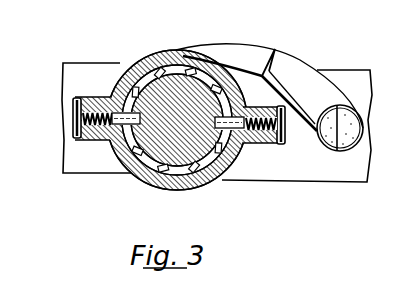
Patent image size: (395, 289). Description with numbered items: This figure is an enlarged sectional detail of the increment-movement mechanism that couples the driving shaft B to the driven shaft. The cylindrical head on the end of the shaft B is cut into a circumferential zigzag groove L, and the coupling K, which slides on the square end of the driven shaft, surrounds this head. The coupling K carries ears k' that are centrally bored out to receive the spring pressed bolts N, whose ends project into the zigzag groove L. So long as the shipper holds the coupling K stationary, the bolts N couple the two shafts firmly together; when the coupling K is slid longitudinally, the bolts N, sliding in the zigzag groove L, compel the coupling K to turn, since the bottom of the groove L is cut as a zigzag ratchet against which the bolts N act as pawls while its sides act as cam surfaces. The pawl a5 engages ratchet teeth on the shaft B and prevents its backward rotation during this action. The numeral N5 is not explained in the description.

The ears k' is at (81, 104).
The spring pressed bolts N is at (118, 108).
The zigzag groove L is at (196, 52).
The pawl a5 is at (312, 68).
The shaft B is at (152, 190).
The coupling K is at (178, 193).
The right pin block N5 is at (205, 190).